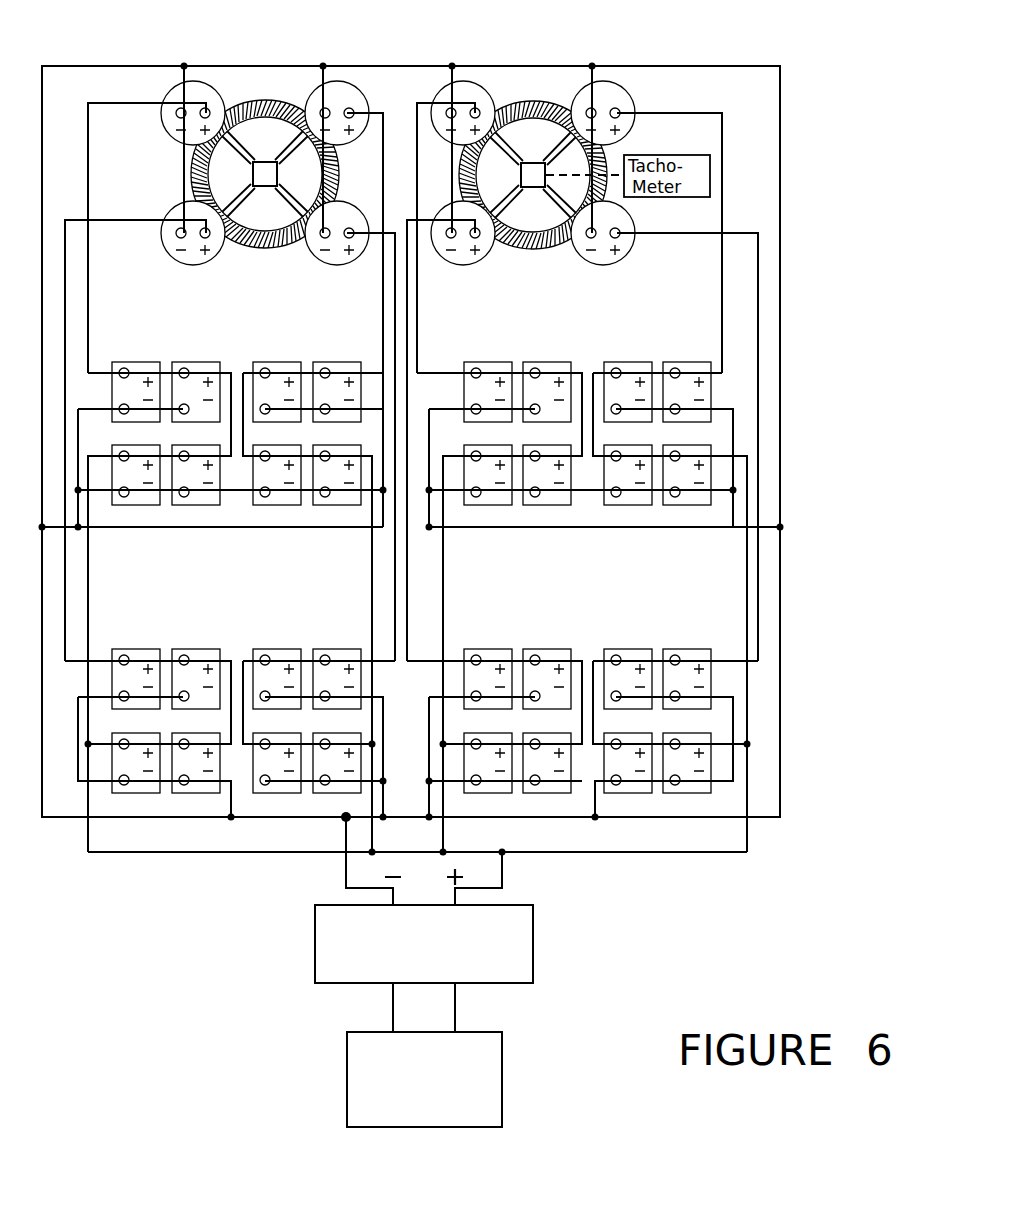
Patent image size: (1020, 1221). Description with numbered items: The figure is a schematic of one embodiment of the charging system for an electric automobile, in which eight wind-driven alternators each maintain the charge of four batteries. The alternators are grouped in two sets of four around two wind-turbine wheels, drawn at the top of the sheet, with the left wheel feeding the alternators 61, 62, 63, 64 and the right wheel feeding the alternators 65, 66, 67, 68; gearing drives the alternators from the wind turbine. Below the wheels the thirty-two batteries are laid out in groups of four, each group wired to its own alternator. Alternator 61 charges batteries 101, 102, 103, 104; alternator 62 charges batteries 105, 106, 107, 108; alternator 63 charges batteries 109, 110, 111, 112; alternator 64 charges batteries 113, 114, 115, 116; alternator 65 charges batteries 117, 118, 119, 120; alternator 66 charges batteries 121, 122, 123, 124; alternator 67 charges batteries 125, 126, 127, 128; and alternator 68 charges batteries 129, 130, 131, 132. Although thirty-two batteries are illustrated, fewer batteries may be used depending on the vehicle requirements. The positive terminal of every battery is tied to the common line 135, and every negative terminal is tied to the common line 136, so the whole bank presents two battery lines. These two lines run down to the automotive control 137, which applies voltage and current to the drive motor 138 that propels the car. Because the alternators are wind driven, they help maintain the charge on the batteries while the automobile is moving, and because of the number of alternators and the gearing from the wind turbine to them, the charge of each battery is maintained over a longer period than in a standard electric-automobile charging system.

The alternator 61 is at (185, 66).
The alternator 62 is at (200, 258).
The alternator 63 is at (345, 93).
The alternator 64 is at (333, 260).
The alternator 65 is at (470, 93).
The alternator 66 is at (462, 258).
The alternator 67 is at (610, 97).
The alternator 68 is at (630, 247).
The battery 101 is at (153, 365).
The battery 102 is at (218, 350).
The battery 103 is at (143, 470).
The battery 104 is at (193, 470).
The battery 105 is at (140, 657).
The battery 106 is at (200, 655).
The battery 107 is at (143, 790).
The battery 108 is at (200, 790).
The battery 109 is at (303, 340).
The battery 110 is at (365, 343).
The battery 111 is at (288, 470).
The battery 112 is at (335, 478).
The battery 113 is at (290, 655).
The battery 114 is at (337, 652).
The battery 115 is at (283, 793).
The battery 116 is at (337, 793).
The battery 117 is at (498, 368).
The battery 118 is at (553, 370).
The battery 119 is at (497, 477).
The battery 120 is at (552, 478).
The battery 121 is at (488, 680).
The battery 122 is at (552, 657).
The battery 123 is at (497, 790).
The battery 124 is at (552, 790).
The battery 125 is at (633, 368).
The battery 126 is at (693, 370).
The battery 127 is at (633, 478).
The battery 128 is at (682, 478).
The battery 129 is at (632, 657).
The battery 130 is at (690, 657).
The battery 131 is at (645, 790).
The battery 132 is at (702, 790).
The common line 135 is at (672, 852).
The common line 136 is at (272, 817).
The automotive control 137 is at (533, 948).
The drive motor 138 is at (502, 1067).